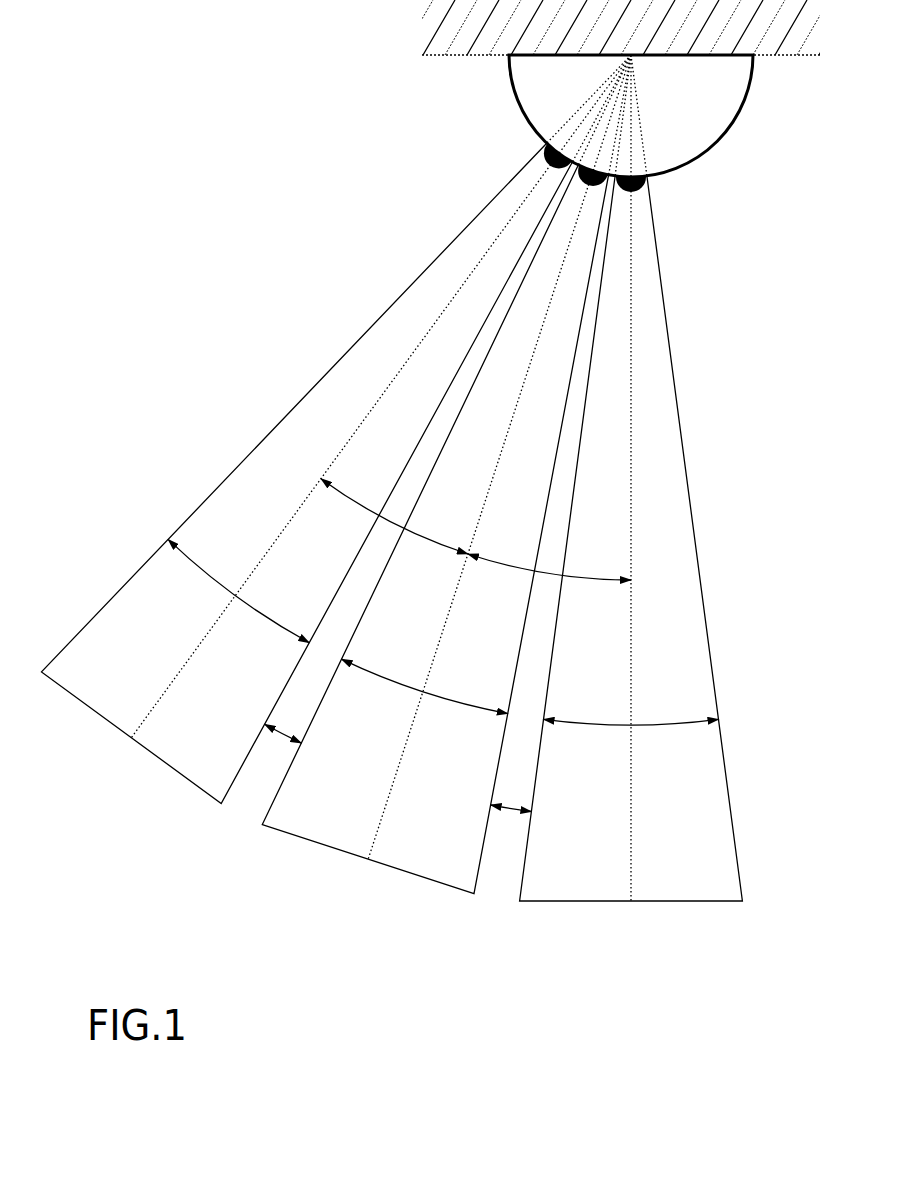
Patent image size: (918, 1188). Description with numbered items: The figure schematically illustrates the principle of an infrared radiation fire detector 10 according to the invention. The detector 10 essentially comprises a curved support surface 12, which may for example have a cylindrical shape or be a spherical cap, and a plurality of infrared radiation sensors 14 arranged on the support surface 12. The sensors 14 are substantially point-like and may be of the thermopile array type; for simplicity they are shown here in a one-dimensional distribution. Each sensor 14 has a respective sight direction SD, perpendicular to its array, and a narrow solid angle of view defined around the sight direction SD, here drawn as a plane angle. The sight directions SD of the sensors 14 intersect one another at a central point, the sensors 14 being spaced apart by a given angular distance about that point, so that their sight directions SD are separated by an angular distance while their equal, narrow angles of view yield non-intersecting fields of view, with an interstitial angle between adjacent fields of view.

The mounting surface / ceiling R is at (458, 56).
The infrared radiation fire detector 10 is at (676, 186).
The curved support surface 12 is at (725, 133).
The infrared radiation sensors 14 is at (553, 180).
The sight direction SD is at (157, 704).